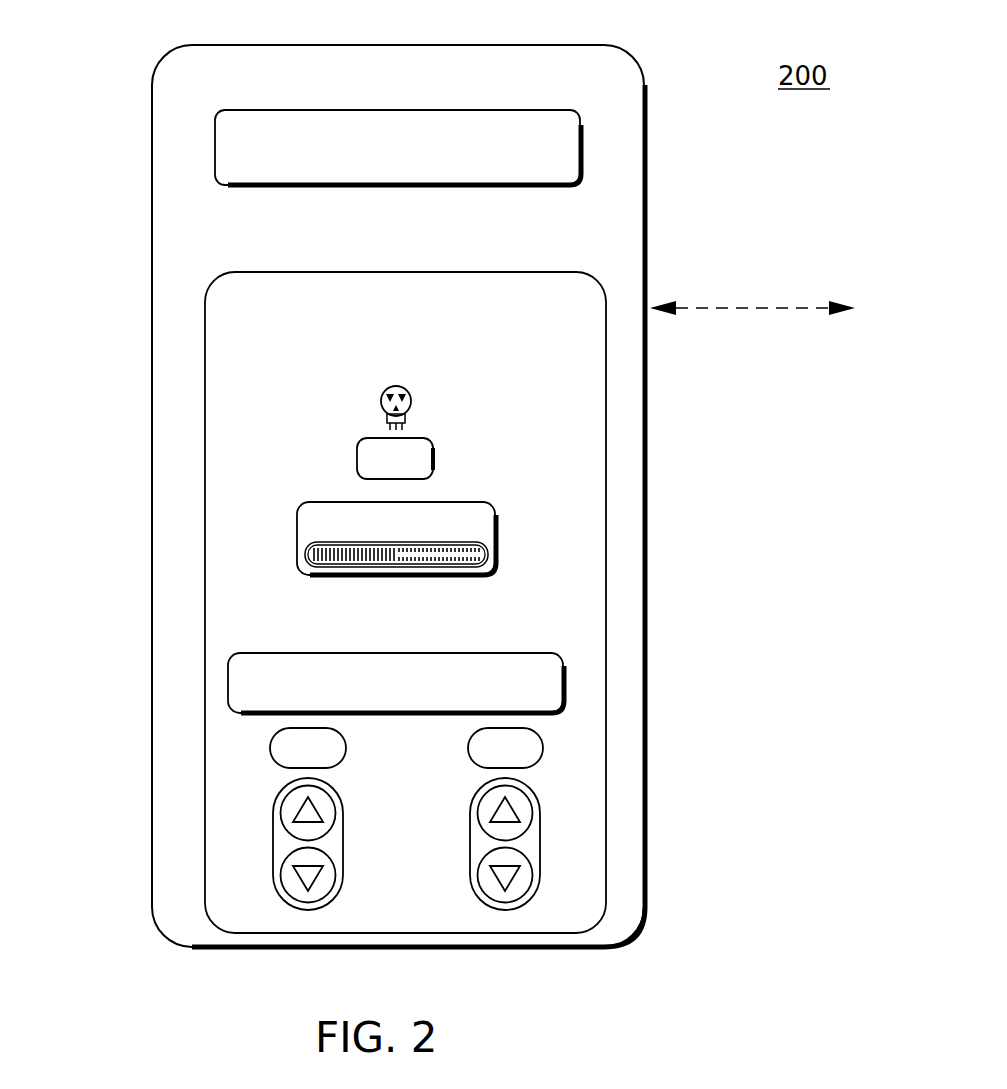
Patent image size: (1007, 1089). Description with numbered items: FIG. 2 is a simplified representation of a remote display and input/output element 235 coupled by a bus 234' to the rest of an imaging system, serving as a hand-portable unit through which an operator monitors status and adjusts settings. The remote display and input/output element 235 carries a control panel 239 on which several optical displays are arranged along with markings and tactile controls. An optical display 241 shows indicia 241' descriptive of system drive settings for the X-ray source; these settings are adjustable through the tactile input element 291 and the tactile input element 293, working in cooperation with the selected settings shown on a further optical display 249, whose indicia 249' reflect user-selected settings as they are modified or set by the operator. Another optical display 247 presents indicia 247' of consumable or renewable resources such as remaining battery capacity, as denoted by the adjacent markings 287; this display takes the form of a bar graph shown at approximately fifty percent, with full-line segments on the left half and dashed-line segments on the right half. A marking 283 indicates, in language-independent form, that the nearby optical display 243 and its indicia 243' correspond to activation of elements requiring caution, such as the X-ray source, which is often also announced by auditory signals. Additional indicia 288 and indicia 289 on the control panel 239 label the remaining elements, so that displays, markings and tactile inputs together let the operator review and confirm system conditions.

The remote display and input/output element 235 is at (452, 45).
The optical display 241 is at (398, 132).
The indicia 241' is at (736, 149).
The bus 234' is at (762, 286).
The control panel 239 is at (432, 272).
The marking 283 is at (385, 390).
The optical display 243 is at (336, 443).
The indicia 243' is at (683, 463).
The markings 287 is at (378, 502).
The optical display 247 is at (364, 571).
The indicia 247' is at (706, 551).
The optical display 249 is at (396, 667).
The indicia 249' is at (724, 683).
The indicia 288 is at (270, 748).
The indicia 289 is at (542, 748).
The tactile input element 291 is at (275, 893).
The tactile input element 293 is at (535, 893).